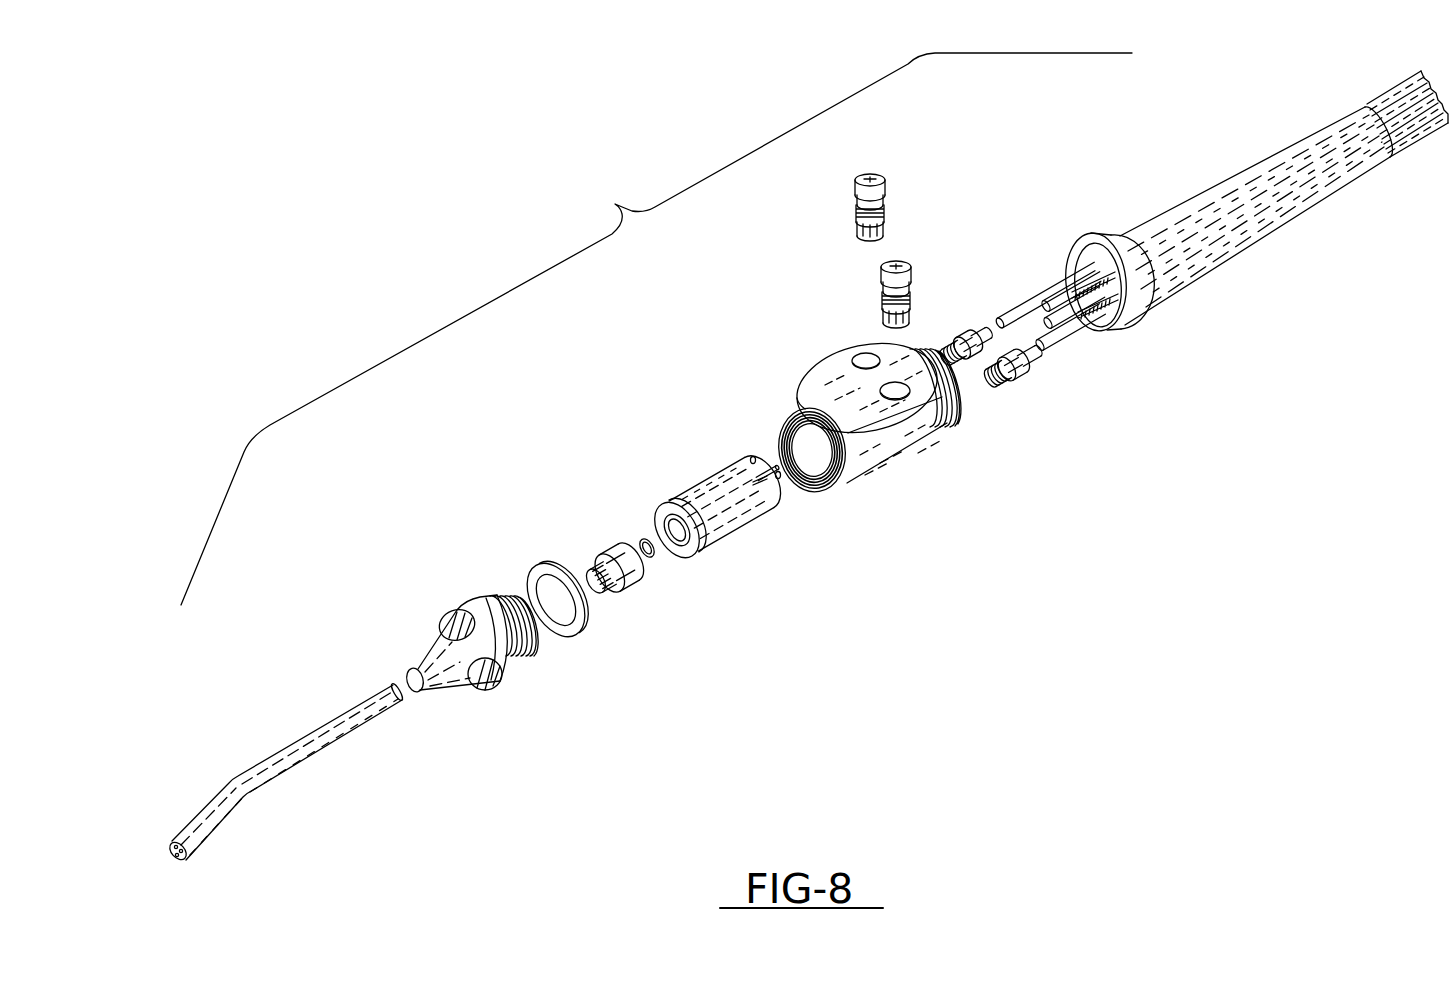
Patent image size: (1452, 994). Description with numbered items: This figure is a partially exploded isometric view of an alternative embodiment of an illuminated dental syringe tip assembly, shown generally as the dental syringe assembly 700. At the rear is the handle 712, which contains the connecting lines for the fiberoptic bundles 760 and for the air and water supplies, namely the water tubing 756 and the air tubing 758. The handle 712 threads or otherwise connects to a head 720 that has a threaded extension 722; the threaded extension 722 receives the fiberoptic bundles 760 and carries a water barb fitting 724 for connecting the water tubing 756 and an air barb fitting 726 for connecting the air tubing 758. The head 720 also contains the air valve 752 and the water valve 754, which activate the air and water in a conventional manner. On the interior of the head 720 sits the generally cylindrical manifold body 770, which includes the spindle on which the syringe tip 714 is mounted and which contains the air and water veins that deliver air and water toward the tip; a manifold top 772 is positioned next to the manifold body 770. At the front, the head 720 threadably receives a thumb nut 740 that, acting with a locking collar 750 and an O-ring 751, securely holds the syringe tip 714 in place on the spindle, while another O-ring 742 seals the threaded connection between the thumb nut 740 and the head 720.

The dental syringe assembly 700 is at (546, 198).
The handle 712 is at (1265, 210).
The syringe tip 714 is at (323, 735).
The head 720 is at (895, 433).
The threaded extension 722 is at (960, 403).
The water barb fitting 724 is at (1018, 375).
The air barb fitting 726 is at (958, 332).
The thumb nut 740 is at (455, 677).
The O-ring 742 is at (537, 571).
The locking collar 750 is at (622, 585).
The O-ring 751 is at (642, 538).
The air valve 752 is at (846, 188).
The water valve 754 is at (877, 276).
The water tubing 756 is at (1063, 338).
The air tubing 758 is at (1035, 300).
The fiberoptic bundles 760 is at (1095, 273).
The manifold body 770 is at (731, 507).
The manifold top 772 is at (698, 552).